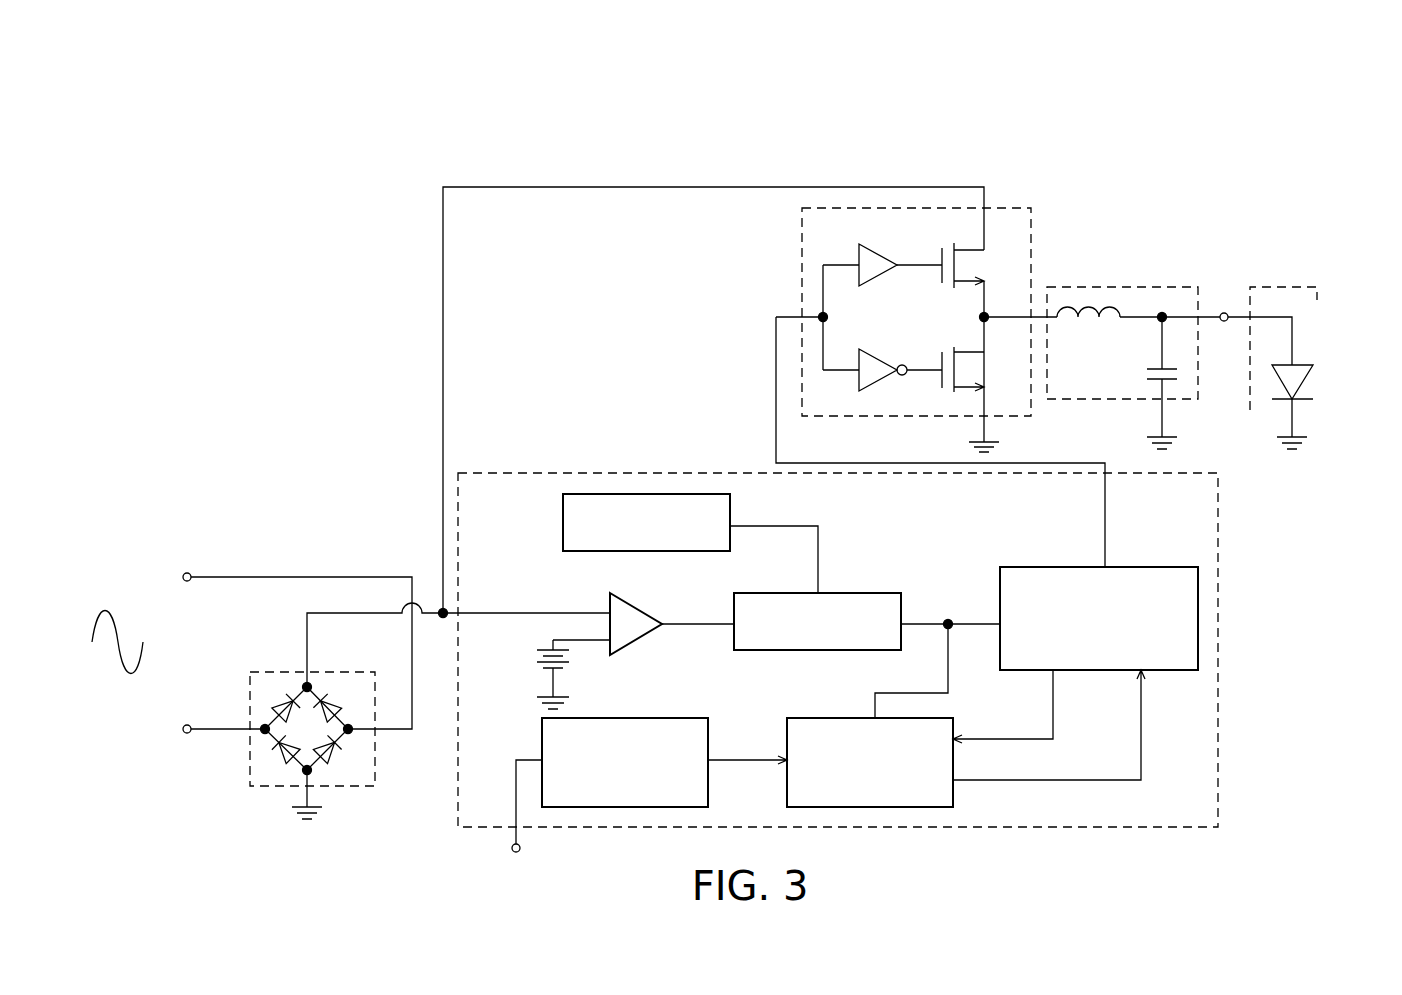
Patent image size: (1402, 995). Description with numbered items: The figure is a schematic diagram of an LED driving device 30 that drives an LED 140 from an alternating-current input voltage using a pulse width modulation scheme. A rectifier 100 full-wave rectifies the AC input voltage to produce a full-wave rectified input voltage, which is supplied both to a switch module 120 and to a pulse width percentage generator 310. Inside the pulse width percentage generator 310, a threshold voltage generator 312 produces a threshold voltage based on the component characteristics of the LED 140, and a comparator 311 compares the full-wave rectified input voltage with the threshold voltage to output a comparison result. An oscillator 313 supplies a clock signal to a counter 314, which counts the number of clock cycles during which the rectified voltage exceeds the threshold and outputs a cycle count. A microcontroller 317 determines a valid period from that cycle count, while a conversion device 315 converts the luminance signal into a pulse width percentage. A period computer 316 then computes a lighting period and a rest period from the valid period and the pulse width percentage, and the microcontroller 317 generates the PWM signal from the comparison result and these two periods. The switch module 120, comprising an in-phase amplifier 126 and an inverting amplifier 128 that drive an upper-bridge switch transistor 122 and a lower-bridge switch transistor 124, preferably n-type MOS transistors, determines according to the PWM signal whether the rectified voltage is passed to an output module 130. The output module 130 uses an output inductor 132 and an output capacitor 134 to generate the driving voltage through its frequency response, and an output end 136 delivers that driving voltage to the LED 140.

The LED driving device 30 is at (1236, 168).
The rectifier 100 is at (375, 768).
The switch module 120 is at (1010, 207).
The upper-bridge switch transistor 122 is at (974, 264).
The lower-bridge switch transistor 124 is at (974, 371).
The in-phase amplifier 126 is at (866, 250).
The inverting amplifier 128 is at (866, 355).
The output module 130 is at (1133, 287).
The output inductor 132 is at (1083, 308).
The output capacitor 134 is at (1150, 376).
The output end 136 is at (1224, 323).
The LED 140 is at (1311, 366).
The pulse width percentage generator 310 is at (589, 472).
The comparator 311 is at (610, 600).
The threshold voltage generator 312 is at (541, 660).
The oscillator 313 is at (563, 518).
The counter 314 is at (860, 592).
The conversion device 315 is at (603, 717).
The period computer 316 is at (827, 716).
The microcontroller 317 is at (1138, 566).